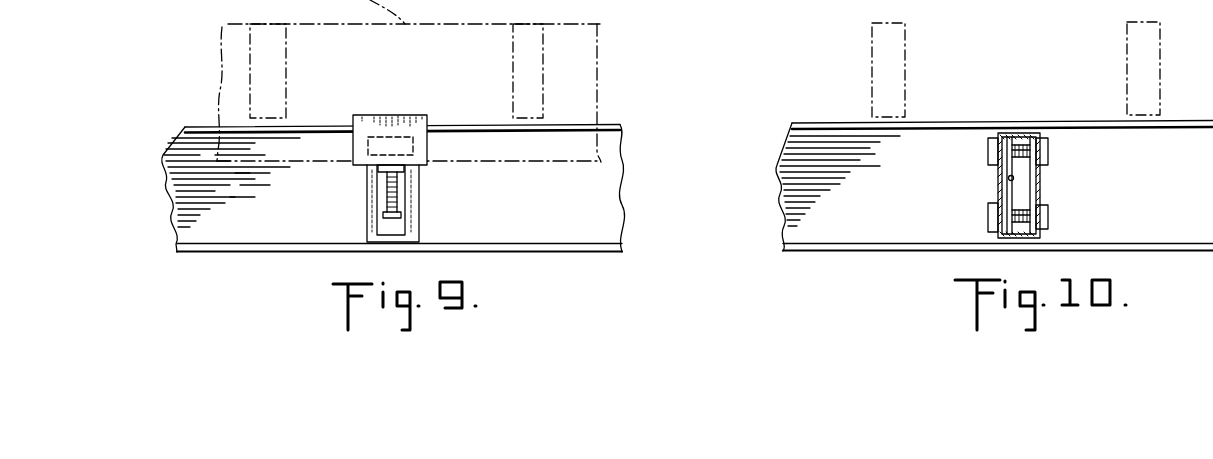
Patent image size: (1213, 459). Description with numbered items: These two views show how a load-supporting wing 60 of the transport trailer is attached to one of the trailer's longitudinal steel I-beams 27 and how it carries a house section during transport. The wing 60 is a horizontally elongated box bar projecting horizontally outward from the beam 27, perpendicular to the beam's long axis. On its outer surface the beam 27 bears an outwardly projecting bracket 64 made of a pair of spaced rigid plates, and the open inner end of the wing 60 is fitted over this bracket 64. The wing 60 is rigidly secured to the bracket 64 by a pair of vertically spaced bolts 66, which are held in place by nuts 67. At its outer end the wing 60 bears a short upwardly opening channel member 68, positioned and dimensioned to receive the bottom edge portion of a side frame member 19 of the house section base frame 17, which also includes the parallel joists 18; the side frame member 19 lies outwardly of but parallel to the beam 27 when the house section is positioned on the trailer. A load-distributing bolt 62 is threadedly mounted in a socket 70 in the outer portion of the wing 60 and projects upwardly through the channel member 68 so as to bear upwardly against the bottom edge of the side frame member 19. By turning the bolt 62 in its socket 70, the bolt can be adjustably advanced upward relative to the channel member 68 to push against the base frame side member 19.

In FIG. 9, the base frame 17 is at (408, 80).
In FIG. 9, the joists 18 is at (286, 74).
In FIG. 10, the joists 18 is at (905, 45).
In FIG. 9, the side frame member 19 is at (583, 77).
In FIG. 9, the longitudinal steel I-beam 27 is at (520, 230).
In FIG. 10, the longitudinal steel I-beam 27 is at (857, 228).
In FIG. 9, the load-supporting wing 60 is at (411, 211).
In FIG. 10, the load-supporting wing 60 is at (1040, 180).
In FIG. 9, the bolt 62 is at (390, 193).
In FIG. 10, the bracket 64 is at (1030, 187).
In FIG. 10, the bolts 66 is at (988, 152).
In FIG. 10, the nuts 67 is at (1048, 140).
In FIG. 9, the channel member 68 is at (383, 116).
In FIG. 9, the socket 70 is at (402, 174).